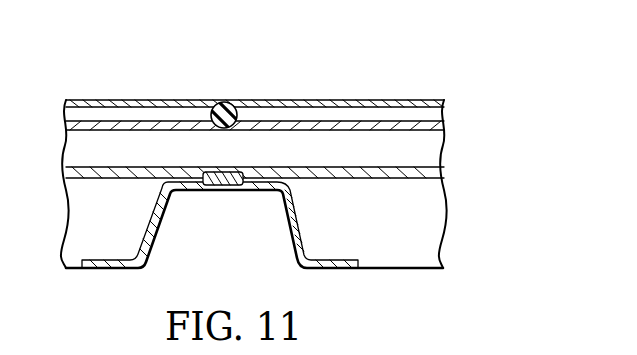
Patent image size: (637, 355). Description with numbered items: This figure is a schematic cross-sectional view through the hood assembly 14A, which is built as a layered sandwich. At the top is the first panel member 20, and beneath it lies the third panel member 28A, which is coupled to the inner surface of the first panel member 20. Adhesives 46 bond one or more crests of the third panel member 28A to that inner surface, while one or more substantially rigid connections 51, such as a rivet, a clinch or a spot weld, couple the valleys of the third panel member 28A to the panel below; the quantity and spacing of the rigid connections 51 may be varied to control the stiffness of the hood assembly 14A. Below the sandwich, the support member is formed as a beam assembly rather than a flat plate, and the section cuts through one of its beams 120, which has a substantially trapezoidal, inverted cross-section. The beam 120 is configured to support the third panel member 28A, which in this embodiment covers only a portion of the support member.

The hood assembly 14A is at (464, 52).
The first panel member 20 is at (358, 101).
The third panel member 28A is at (453, 132).
The adhesives 46 is at (238, 106).
The rigid connections 51 is at (223, 186).
The beam 120 is at (297, 222).